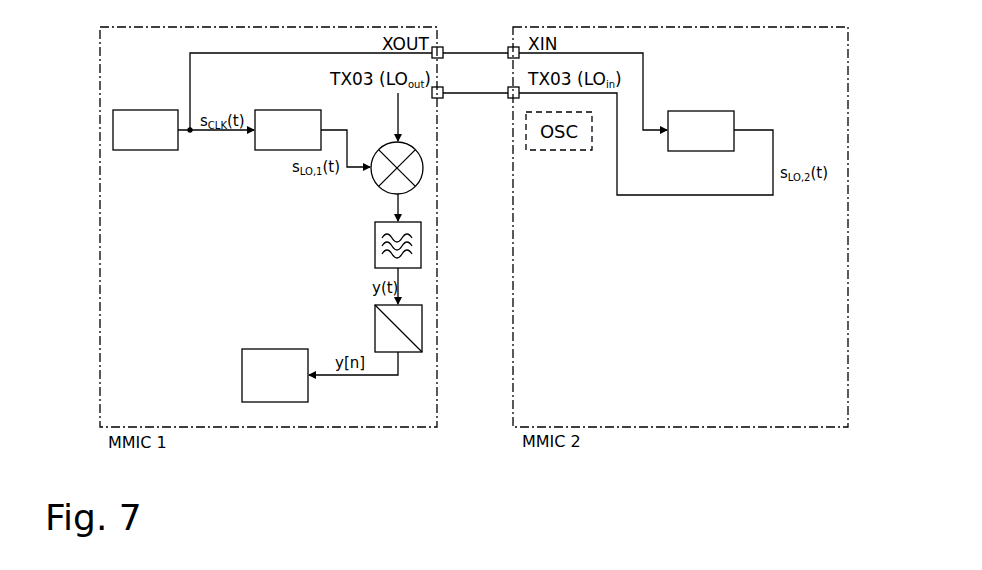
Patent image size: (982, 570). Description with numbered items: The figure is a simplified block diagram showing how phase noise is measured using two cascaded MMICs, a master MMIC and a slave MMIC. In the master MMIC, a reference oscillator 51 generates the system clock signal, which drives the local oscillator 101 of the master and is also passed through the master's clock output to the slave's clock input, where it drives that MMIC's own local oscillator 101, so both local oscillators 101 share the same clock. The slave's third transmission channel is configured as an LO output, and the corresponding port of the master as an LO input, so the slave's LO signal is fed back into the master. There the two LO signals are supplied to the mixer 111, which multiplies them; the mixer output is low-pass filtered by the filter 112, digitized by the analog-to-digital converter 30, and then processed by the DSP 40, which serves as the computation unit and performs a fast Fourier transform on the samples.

The oscillator 51 is at (140, 110).
The local oscillator 101 is at (283, 110).
The mixer 111 is at (385, 191).
The filter 112 is at (373, 262).
The analog-to-digital converter 30 is at (373, 330).
The DSP 40 is at (272, 349).